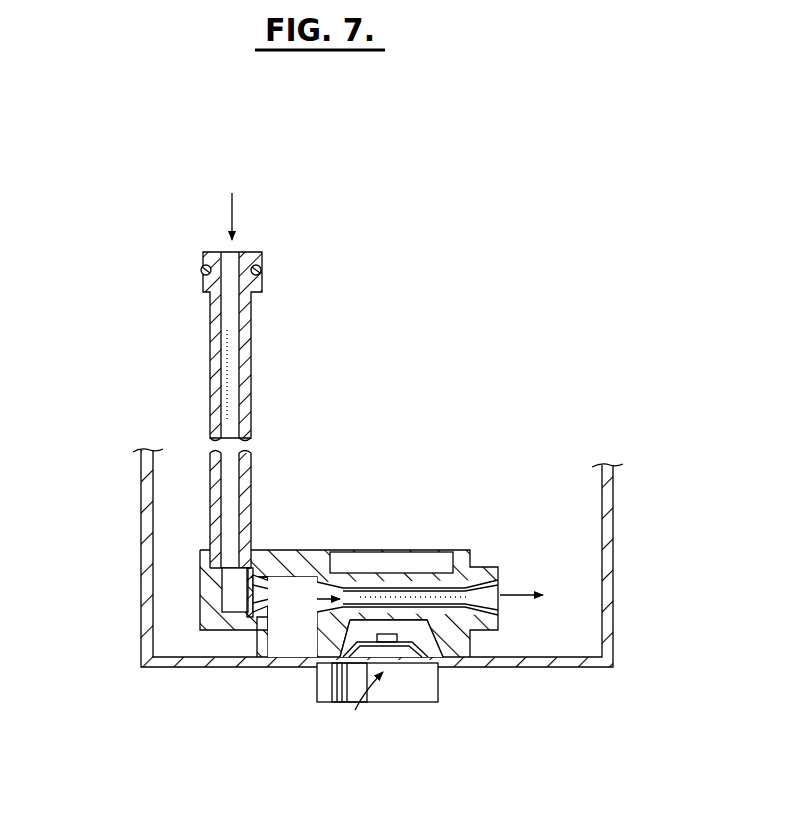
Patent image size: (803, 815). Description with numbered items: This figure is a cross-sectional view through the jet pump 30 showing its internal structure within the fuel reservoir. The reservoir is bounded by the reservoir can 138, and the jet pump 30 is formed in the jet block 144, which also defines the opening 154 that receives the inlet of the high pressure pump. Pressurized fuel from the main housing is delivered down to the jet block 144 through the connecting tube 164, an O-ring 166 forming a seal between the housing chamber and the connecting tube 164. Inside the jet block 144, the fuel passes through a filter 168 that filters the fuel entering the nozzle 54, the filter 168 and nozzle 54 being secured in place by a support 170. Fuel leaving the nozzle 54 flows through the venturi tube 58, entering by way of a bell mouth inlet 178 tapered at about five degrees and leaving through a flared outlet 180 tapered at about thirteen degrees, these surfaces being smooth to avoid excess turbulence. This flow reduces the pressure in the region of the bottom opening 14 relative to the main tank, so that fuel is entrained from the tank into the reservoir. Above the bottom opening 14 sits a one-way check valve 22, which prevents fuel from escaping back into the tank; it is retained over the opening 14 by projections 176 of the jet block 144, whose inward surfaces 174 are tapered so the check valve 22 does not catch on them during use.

The bottom opening 14 is at (397, 660).
The one-way check valve 22 is at (365, 670).
The jet pump 30 is at (497, 537).
The nozzle 54 is at (277, 582).
The venturi tube 58 is at (392, 597).
The reservoir can 138 is at (613, 543).
The jet block 144 is at (317, 552).
The opening 154 is at (373, 563).
The connecting tube 164 is at (211, 348).
The O-ring 166 is at (201, 266).
The filter 168 is at (243, 593).
The support 170 is at (208, 588).
The inward surfaces 174 is at (457, 643).
The projections 176 is at (462, 640).
The bell mouth inlet 178 is at (335, 607).
The flared outlet 180 is at (500, 585).